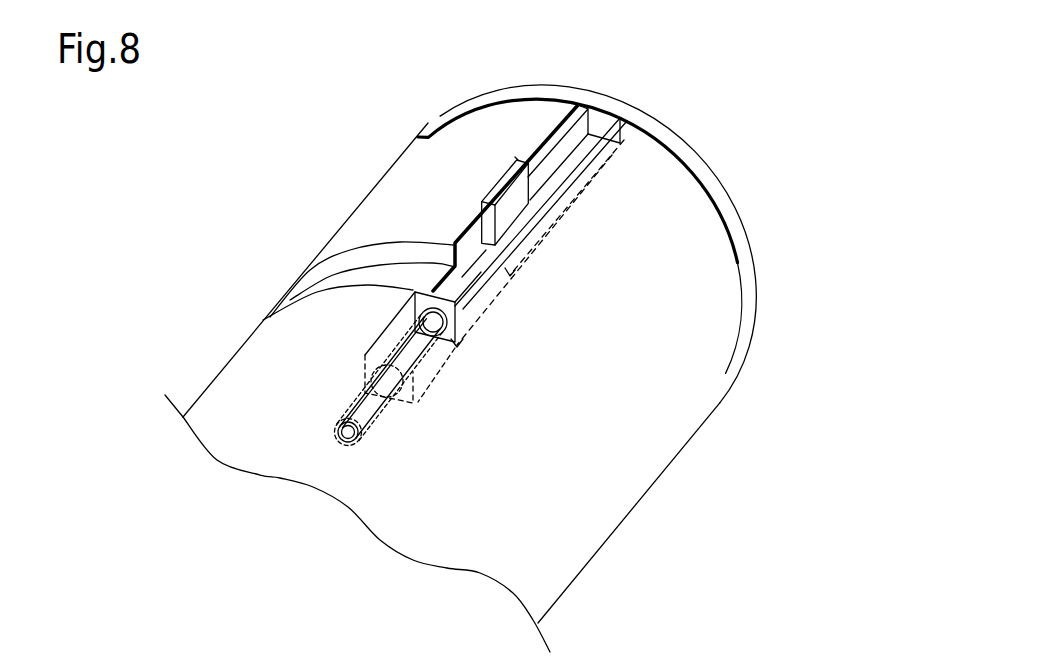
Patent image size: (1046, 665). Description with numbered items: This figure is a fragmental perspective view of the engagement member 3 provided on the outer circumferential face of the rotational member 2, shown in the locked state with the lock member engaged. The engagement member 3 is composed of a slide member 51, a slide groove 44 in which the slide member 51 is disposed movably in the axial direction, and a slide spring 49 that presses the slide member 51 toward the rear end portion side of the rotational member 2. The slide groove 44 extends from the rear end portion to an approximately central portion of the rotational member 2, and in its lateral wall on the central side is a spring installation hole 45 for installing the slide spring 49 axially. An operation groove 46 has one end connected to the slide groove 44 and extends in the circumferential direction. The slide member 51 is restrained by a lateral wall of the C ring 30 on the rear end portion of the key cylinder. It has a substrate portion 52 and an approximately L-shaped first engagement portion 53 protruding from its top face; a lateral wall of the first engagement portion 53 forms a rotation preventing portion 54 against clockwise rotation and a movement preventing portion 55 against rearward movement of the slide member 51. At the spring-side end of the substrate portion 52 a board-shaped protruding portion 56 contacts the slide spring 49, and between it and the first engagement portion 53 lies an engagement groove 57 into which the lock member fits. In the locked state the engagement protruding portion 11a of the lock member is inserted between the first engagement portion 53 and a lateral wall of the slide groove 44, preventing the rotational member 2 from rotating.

The rotational member 2 is at (615, 450).
The engagement member 3 is at (408, 190).
The C ring 30 is at (637, 113).
The engagement protruding portion 11a is at (507, 200).
The slide groove 44 is at (387, 350).
The spring installation hole 45 is at (385, 405).
The operation groove 46 is at (388, 273).
The slide spring 49 is at (450, 350).
The slide member 51 is at (567, 115).
The substrate portion 52 is at (547, 205).
The first engagement portion 53 is at (472, 222).
The rotation preventing portion 54 is at (555, 168).
The movement preventing portion 55 is at (497, 227).
The board-shaped protruding portion 56 is at (463, 315).
The engagement groove 57 is at (460, 267).